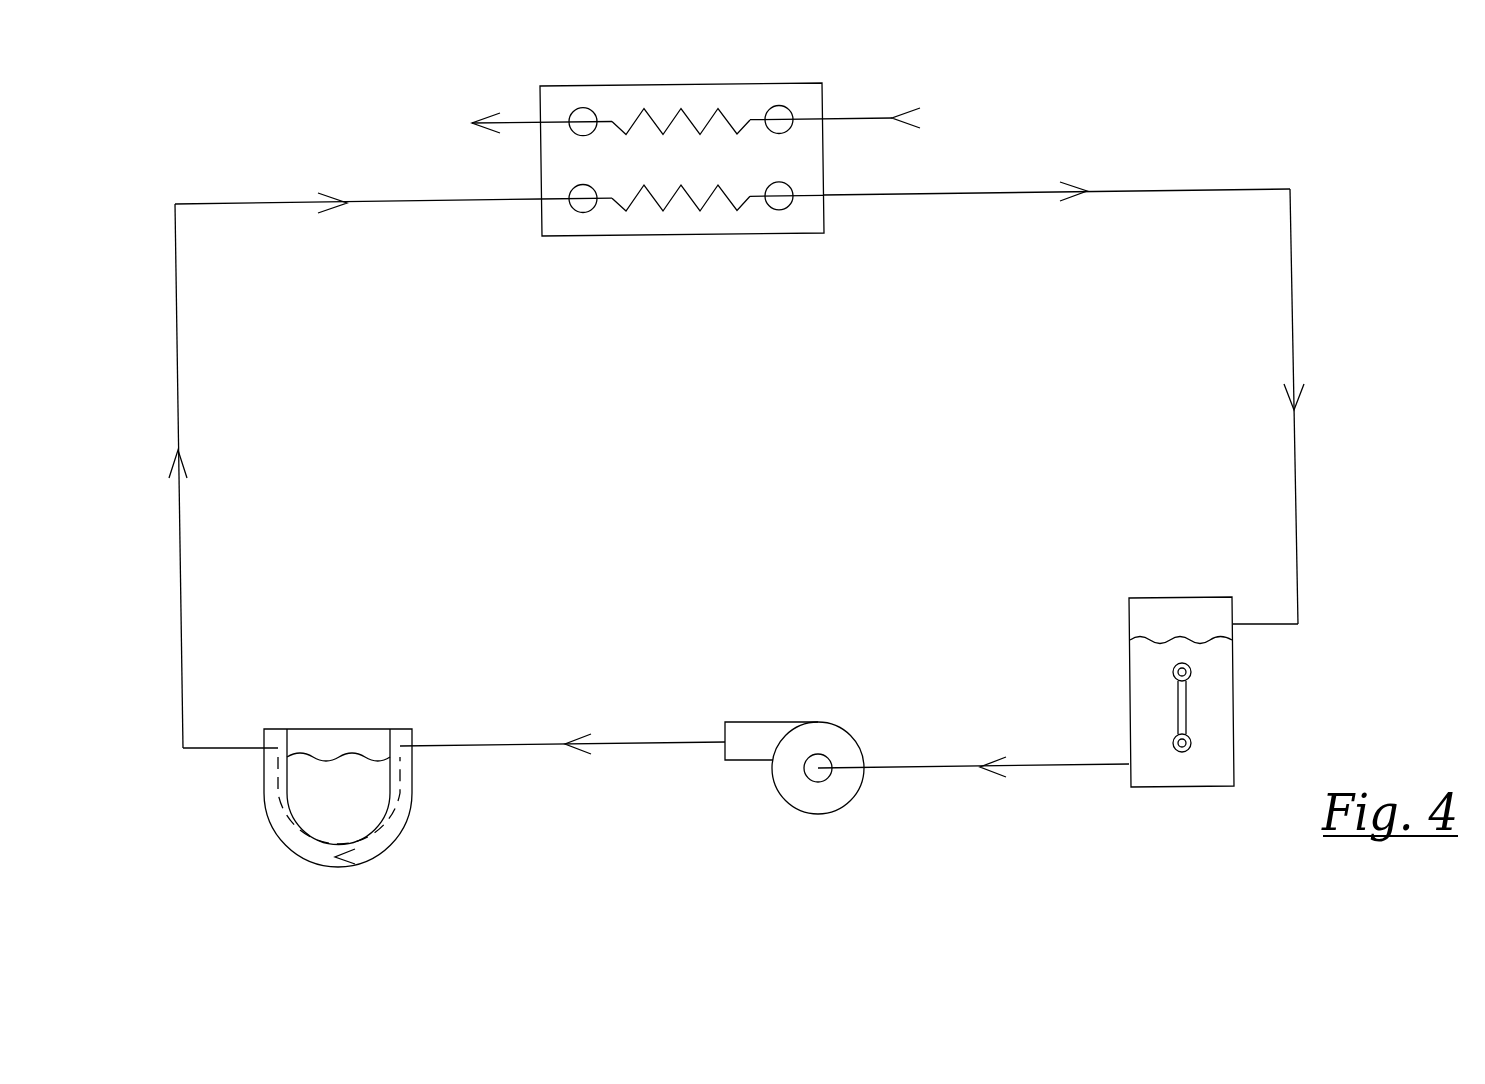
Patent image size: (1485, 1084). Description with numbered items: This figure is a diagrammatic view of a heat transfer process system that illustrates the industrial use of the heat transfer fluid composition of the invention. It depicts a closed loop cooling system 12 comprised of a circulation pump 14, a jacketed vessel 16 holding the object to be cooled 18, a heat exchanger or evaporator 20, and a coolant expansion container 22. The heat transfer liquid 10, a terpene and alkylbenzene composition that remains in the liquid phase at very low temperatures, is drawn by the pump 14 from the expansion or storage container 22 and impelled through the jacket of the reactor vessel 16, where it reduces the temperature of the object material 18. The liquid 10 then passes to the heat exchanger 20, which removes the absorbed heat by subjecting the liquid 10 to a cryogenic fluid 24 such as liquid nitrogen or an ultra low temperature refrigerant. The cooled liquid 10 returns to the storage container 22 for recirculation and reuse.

The heat transfer liquid 10 is at (1225, 713).
The closed loop cooling system 12 is at (1352, 213).
The circulation pump 14 is at (840, 722).
The jacketed vessel 16 is at (407, 826).
The object to be cooled 18 is at (327, 770).
The heat exchanger 20 is at (748, 234).
The coolant expansion container 22 is at (1165, 598).
The cryogenic fluid 24 is at (850, 118).